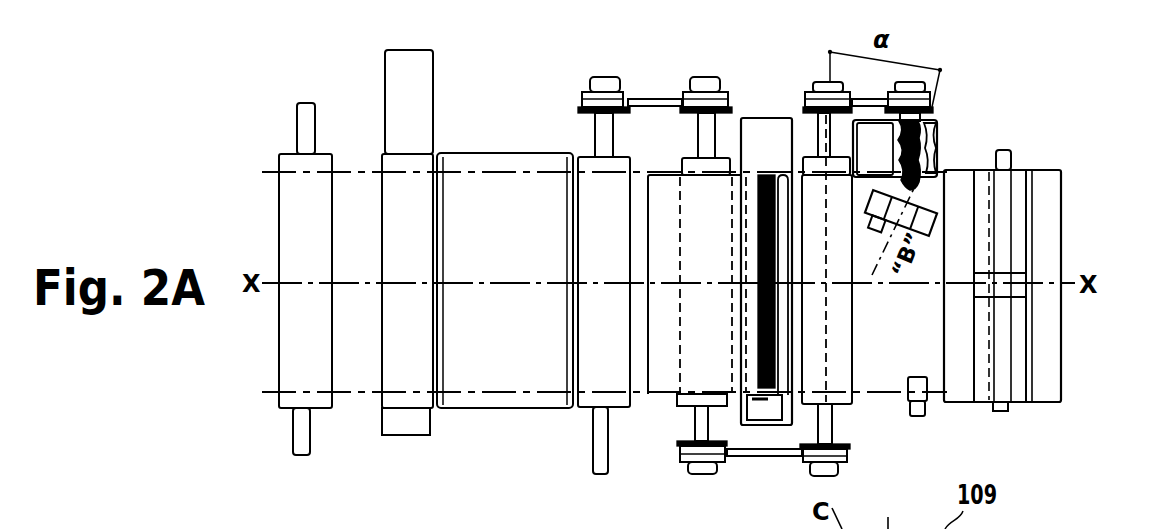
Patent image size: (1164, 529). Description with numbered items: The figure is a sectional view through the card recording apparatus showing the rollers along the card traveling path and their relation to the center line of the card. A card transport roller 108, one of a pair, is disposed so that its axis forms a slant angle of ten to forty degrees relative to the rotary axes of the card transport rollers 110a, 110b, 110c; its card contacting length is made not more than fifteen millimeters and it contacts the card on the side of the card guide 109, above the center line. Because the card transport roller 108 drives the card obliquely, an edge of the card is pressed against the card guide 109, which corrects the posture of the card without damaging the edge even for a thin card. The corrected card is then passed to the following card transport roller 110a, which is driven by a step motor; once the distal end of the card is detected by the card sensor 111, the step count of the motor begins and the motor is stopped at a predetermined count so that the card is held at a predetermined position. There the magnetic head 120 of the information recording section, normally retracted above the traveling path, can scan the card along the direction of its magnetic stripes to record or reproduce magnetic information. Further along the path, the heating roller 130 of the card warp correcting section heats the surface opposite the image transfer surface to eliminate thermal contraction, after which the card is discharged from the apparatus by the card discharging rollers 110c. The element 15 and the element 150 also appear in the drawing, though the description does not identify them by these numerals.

The roller 15 is at (592, 404).
The card transport roller 108 is at (917, 203).
The card guide 109 is at (937, 127).
The card transport roller 110a is at (840, 402).
The card transport roller 110b is at (686, 402).
The card discharging roller 110c is at (308, 446).
The card sensor 111 is at (922, 409).
The magnetic head 120 is at (762, 407).
The heating roller 130 is at (404, 428).
The frame 150 is at (1046, 170).